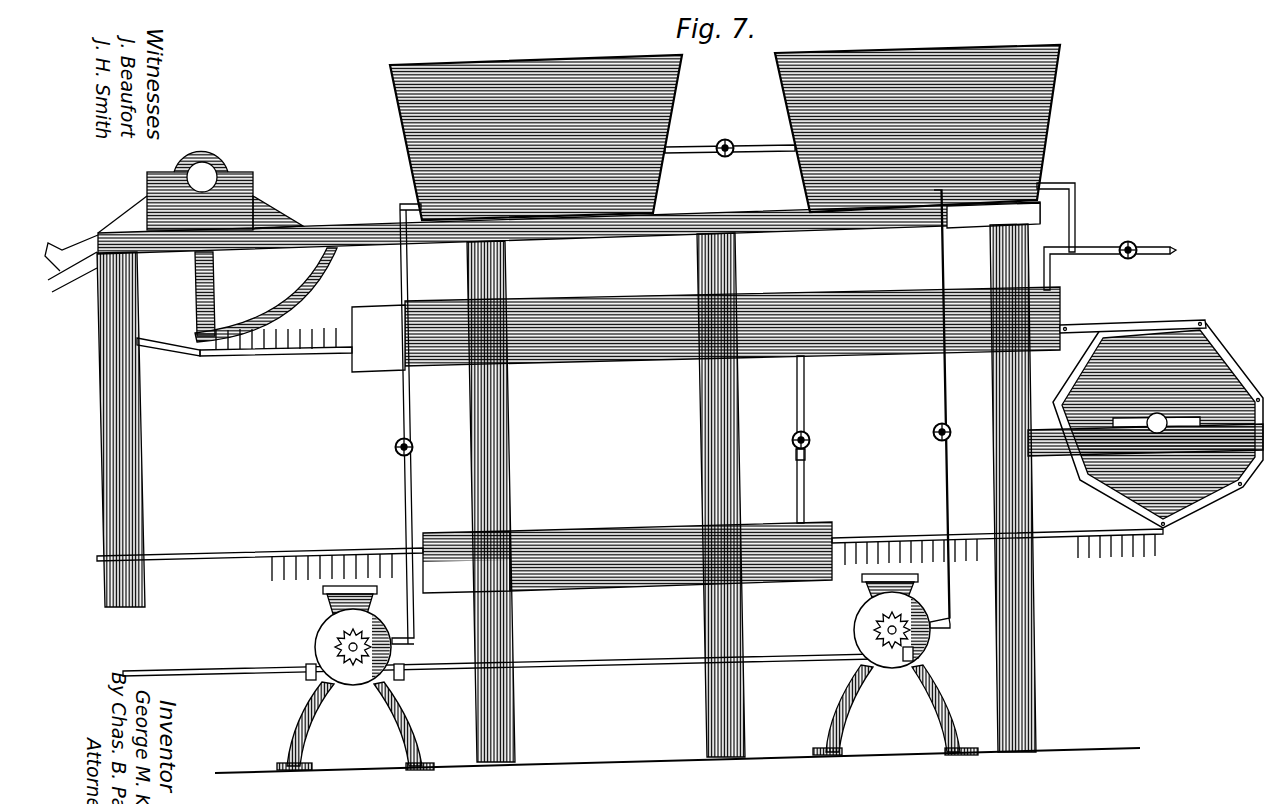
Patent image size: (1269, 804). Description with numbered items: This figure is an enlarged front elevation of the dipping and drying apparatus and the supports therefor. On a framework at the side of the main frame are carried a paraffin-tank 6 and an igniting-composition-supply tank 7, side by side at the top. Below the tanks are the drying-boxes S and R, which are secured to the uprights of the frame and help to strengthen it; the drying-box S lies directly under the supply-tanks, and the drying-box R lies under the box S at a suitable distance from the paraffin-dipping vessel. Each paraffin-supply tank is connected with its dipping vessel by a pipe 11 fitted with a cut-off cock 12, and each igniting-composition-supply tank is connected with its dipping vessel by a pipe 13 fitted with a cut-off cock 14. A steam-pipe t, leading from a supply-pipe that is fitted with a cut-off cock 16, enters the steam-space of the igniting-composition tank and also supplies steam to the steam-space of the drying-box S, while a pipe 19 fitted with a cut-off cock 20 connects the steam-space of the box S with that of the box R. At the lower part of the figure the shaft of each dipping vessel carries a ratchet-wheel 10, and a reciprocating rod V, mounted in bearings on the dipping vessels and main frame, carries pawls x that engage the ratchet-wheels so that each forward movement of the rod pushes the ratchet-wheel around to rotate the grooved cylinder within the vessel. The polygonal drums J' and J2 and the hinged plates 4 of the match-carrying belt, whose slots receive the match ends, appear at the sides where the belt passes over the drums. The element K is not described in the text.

The paraffin-tank 6 is at (540, 67).
The igniting-composition-supply tank 7 is at (885, 62).
The steam-pipe t is at (1106, 236).
The cut-off cock 16 is at (1140, 238).
The drying-box S is at (810, 296).
The drying-box R is at (627, 546).
The reciprocating rod V is at (520, 655).
The polygonal drum J2 is at (200, 352).
The hinged plate 4 is at (263, 353).
The pipe 11 is at (408, 410).
The cut-off cock 12 is at (397, 451).
The pipe 13 is at (946, 394).
The cut-off cock 14 is at (936, 438).
The pipe 19 is at (806, 403).
The cock K is at (816, 446).
The cut-off cock 20 is at (794, 448).
The polygonal drum J' is at (1145, 432).
The ratchet-wheel 10 is at (333, 648).
The pawl x is at (348, 672).